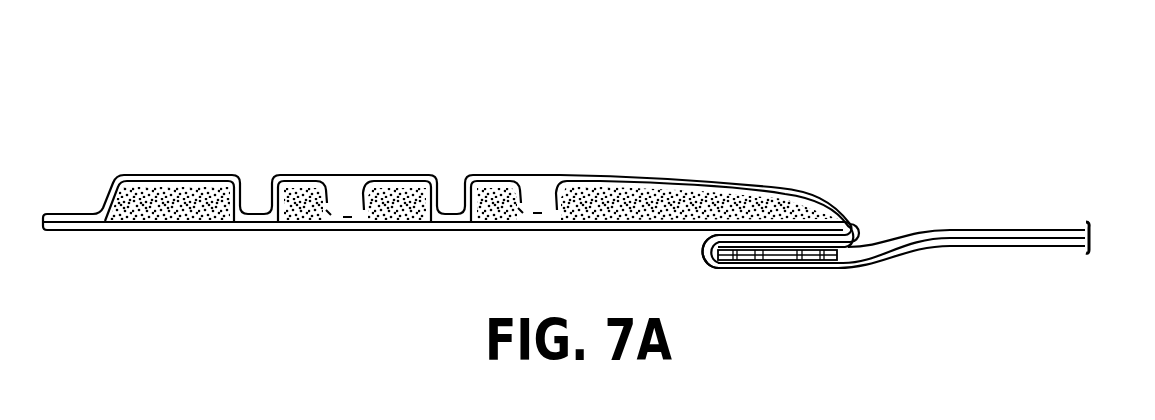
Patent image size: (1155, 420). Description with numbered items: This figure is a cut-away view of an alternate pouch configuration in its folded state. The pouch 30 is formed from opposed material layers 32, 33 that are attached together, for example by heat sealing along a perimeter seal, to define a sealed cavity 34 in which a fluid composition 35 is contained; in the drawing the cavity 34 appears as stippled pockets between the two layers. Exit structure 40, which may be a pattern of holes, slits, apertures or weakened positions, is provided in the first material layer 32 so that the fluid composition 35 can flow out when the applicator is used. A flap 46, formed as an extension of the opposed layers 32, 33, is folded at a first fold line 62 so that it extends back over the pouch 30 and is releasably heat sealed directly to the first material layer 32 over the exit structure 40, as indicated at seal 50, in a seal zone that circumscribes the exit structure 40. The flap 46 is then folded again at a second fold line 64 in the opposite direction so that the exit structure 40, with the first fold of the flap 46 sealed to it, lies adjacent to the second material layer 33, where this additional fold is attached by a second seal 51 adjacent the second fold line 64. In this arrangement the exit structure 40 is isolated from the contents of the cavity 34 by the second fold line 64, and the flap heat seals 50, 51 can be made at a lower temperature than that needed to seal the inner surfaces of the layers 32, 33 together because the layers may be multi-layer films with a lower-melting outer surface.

The pouch 30 is at (442, 96).
The first material layer 32 is at (190, 175).
The second material layer 33 is at (203, 231).
The cavity 34 is at (392, 231).
The fluid composition 35 is at (585, 225).
The exit structure 40 is at (788, 261).
The flap 46 is at (947, 242).
The seal 50 is at (767, 261).
The second seal 51 is at (743, 230).
The first fold line 62 is at (702, 247).
The second fold line 64 is at (865, 234).